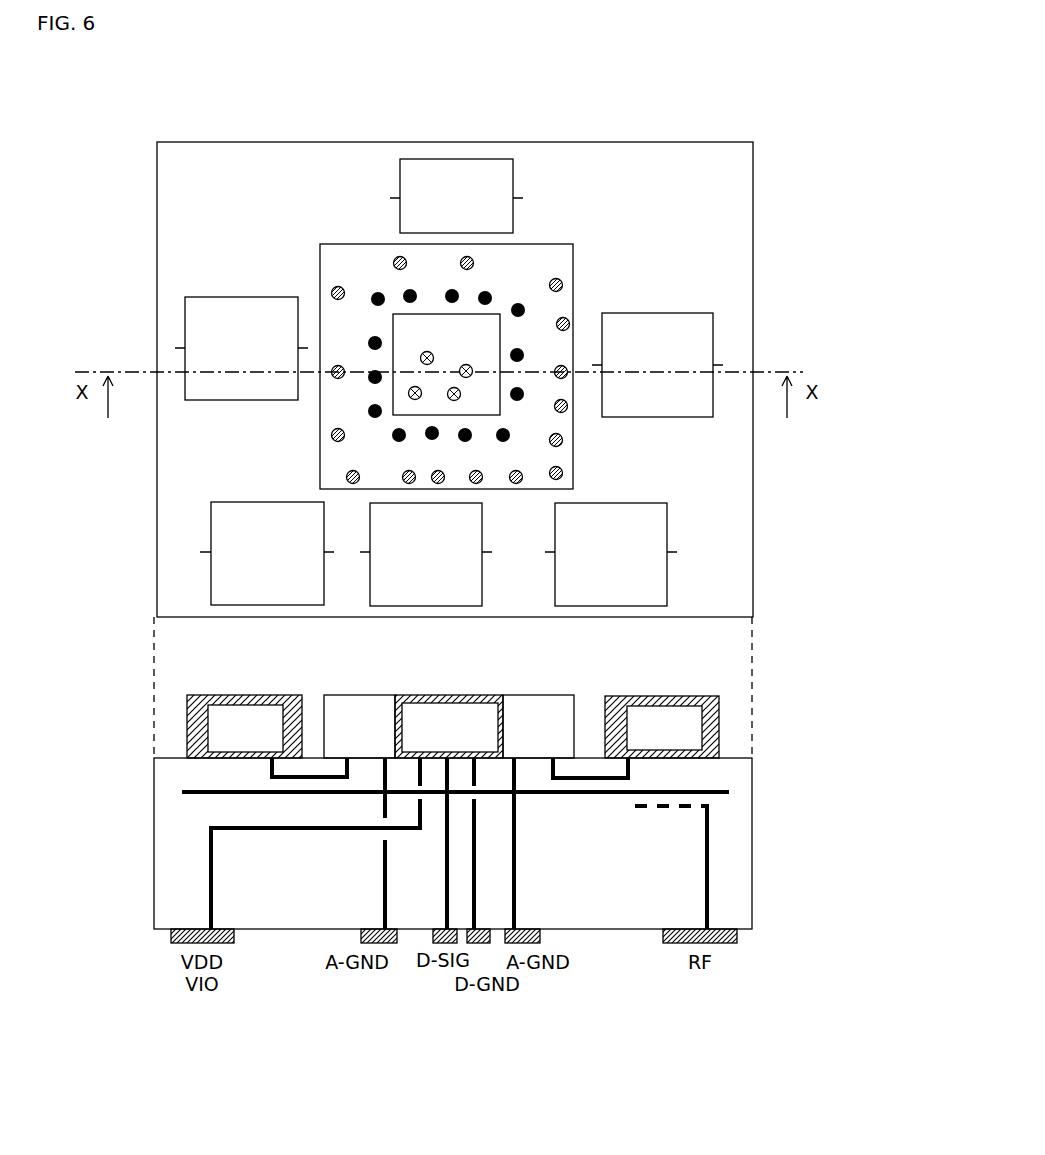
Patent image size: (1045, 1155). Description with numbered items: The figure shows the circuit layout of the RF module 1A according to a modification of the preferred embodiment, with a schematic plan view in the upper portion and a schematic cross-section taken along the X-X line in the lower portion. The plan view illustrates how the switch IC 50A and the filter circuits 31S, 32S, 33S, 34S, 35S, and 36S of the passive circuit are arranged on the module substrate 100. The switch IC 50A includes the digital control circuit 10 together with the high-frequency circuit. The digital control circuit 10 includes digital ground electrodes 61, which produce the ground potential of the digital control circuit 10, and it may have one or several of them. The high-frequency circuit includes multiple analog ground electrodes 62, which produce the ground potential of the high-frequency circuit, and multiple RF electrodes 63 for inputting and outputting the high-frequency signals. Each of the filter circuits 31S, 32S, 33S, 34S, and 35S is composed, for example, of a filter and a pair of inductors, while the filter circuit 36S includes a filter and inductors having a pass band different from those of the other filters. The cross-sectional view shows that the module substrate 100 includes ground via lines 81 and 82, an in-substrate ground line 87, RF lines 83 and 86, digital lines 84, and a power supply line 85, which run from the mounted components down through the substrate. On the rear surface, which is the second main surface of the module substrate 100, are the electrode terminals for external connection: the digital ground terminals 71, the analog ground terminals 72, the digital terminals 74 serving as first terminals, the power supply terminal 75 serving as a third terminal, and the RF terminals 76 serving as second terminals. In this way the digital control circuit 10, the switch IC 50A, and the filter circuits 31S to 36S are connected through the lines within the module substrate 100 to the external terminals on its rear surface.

The RF module 1A is at (777, 108).
The module substrate 100 is at (755, 198).
The digital control circuit 10 is at (500, 314).
The switch IC 50A is at (563, 244).
The filter circuit 31S is at (230, 502).
The filter circuit 32S is at (483, 540).
The filter circuit 33S is at (668, 540).
The filter circuit 34S is at (677, 313).
The filter circuit 35S is at (398, 183).
The filter circuit 36S is at (267, 297).
The digital ground electrode 61 is at (432, 355).
The analog ground electrode 62 is at (521, 316).
The RF electrode 63 is at (565, 410).
The digital ground terminal 71 is at (483, 928).
The analog ground terminal 72 is at (372, 928).
The digital terminal 74 is at (437, 928).
The power supply terminal 75 is at (198, 928).
The RF terminal 76 is at (692, 928).
The ground via line 81 is at (474, 807).
The ground via line 82 is at (382, 848).
The RF line 83 is at (303, 780).
The digital line 84 is at (445, 826).
The power supply line 85 is at (291, 831).
The RF line 86 is at (709, 862).
The in-substrate ground line 87 is at (720, 790).